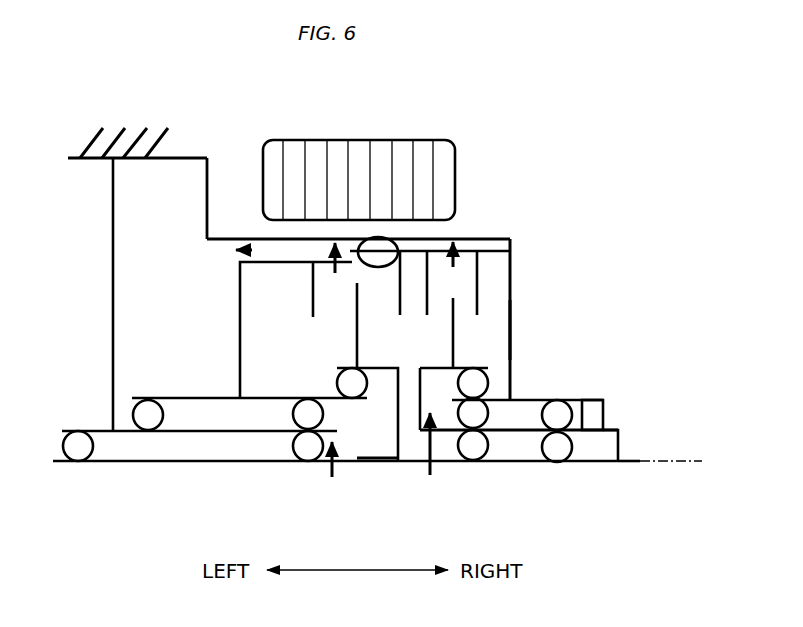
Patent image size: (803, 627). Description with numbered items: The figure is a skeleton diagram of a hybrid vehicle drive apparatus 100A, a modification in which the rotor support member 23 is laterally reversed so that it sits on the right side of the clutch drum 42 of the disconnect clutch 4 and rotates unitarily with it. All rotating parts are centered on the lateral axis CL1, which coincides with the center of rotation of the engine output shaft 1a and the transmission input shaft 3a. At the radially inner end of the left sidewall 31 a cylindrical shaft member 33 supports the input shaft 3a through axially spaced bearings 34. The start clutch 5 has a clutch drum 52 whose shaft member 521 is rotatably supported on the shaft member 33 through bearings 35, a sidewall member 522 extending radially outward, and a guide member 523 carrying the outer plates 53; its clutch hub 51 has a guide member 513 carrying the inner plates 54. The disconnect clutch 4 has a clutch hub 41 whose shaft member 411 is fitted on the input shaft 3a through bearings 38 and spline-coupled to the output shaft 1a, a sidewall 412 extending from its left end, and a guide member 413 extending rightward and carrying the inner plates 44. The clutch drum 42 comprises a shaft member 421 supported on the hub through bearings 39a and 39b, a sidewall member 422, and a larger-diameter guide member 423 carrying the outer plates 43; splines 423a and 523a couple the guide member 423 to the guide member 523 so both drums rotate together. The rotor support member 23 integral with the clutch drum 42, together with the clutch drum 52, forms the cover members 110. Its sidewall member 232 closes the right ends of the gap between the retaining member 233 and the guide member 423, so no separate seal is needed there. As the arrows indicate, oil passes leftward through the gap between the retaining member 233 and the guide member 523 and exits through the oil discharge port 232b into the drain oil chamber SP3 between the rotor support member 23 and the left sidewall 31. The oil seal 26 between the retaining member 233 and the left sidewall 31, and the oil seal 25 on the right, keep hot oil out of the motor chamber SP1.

The drive apparatus 100A is at (497, 86).
The motor chamber SP1 is at (483, 157).
The drain oil chamber SP3 is at (145, 255).
The rotor support member 23 is at (313, 140).
The cover members 110 is at (295, 236).
The spline 423a is at (360, 249).
The spline 523a is at (425, 212).
The guide member 523 is at (268, 260).
The oil seal 26 is at (207, 215).
The retaining member 233 is at (470, 238).
The guide member 423 is at (493, 262).
The disconnect clutch 4 is at (512, 262).
The sidewall member 232 is at (512, 272).
The outer plates 43 is at (478, 296).
The clutch drum 42 is at (512, 305).
The sidewall member 422 is at (512, 328).
The oil discharge port 232b is at (222, 245).
The sidewall member 522 is at (240, 280).
The clutch drum 52 is at (238, 303).
The outer plates 53 is at (313, 290).
The inner plates 54 is at (357, 336).
The start clutch 5 is at (296, 338).
The inner plates 44 is at (453, 351).
The guide member 413 is at (482, 366).
The left sidewall 31 is at (113, 350).
The bearing 39b is at (488, 378).
The shaft member 421 is at (545, 402).
The oil seal 25 is at (604, 416).
The output shaft 1a is at (632, 460).
The axis CL1 is at (691, 461).
The guide member 513 is at (381, 372).
The clutch hub 51 is at (396, 445).
The sidewall 412 is at (416, 422).
The bearings 38 is at (472, 455).
The clutch hub 41 is at (505, 444).
The shaft member 411 is at (528, 433).
The bearing 39a is at (561, 424).
The bearings 34 is at (77, 462).
The input shaft 3a is at (104, 463).
The bearings 35 is at (150, 418).
The shaft member 521 is at (207, 403).
The shaft member 33 is at (235, 433).